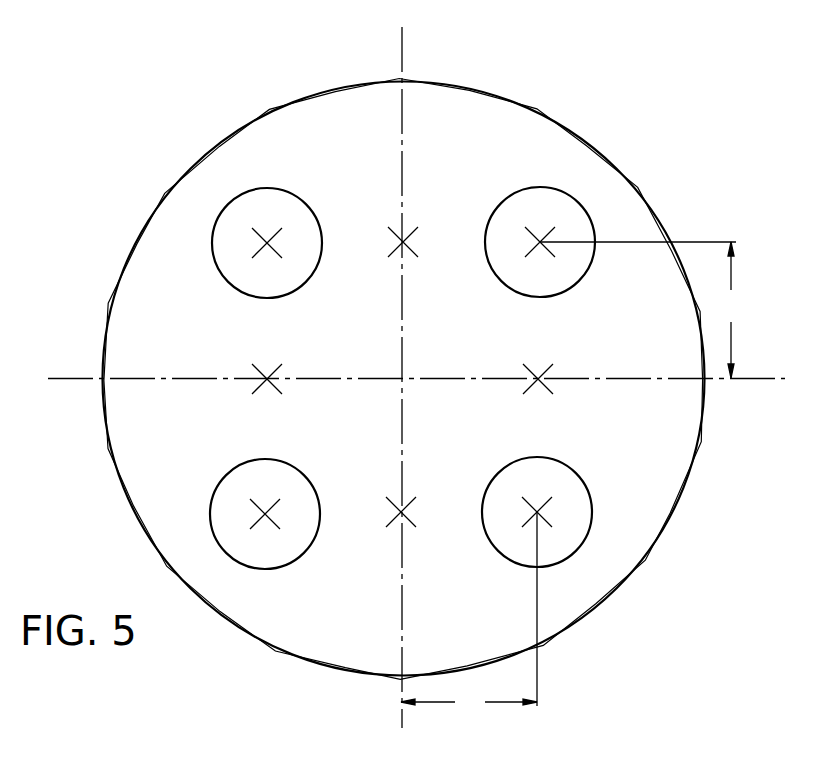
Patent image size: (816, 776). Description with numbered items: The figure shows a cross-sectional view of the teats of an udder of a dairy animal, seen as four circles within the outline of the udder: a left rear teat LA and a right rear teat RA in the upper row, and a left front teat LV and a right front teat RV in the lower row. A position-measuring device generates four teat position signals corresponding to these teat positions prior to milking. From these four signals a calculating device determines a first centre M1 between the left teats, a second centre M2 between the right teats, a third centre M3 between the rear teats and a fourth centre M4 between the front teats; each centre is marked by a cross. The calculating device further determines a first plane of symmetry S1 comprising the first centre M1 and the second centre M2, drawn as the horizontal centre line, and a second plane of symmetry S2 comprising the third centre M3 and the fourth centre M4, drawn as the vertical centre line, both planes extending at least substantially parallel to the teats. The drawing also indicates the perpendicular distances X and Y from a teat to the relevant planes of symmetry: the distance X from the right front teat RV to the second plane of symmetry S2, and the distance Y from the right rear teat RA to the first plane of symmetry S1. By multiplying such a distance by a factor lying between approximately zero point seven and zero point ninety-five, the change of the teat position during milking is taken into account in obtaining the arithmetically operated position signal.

The left rear teat LA is at (267, 191).
The right rear teat RA is at (540, 188).
The left front teat LV is at (265, 459).
The right front teat RV is at (537, 457).
The first centre M1 is at (267, 379).
The second centre M2 is at (538, 379).
The third centre M3 is at (403, 242).
The fourth centre M4 is at (403, 512).
The first plane of symmetry S1 is at (95, 415).
The second plane of symmetry S2 is at (458, 60).
The perpendicular distance to second plane of symmetry X is at (469, 615).
The perpendicular distance to first plane of symmetry Y is at (639, 310).